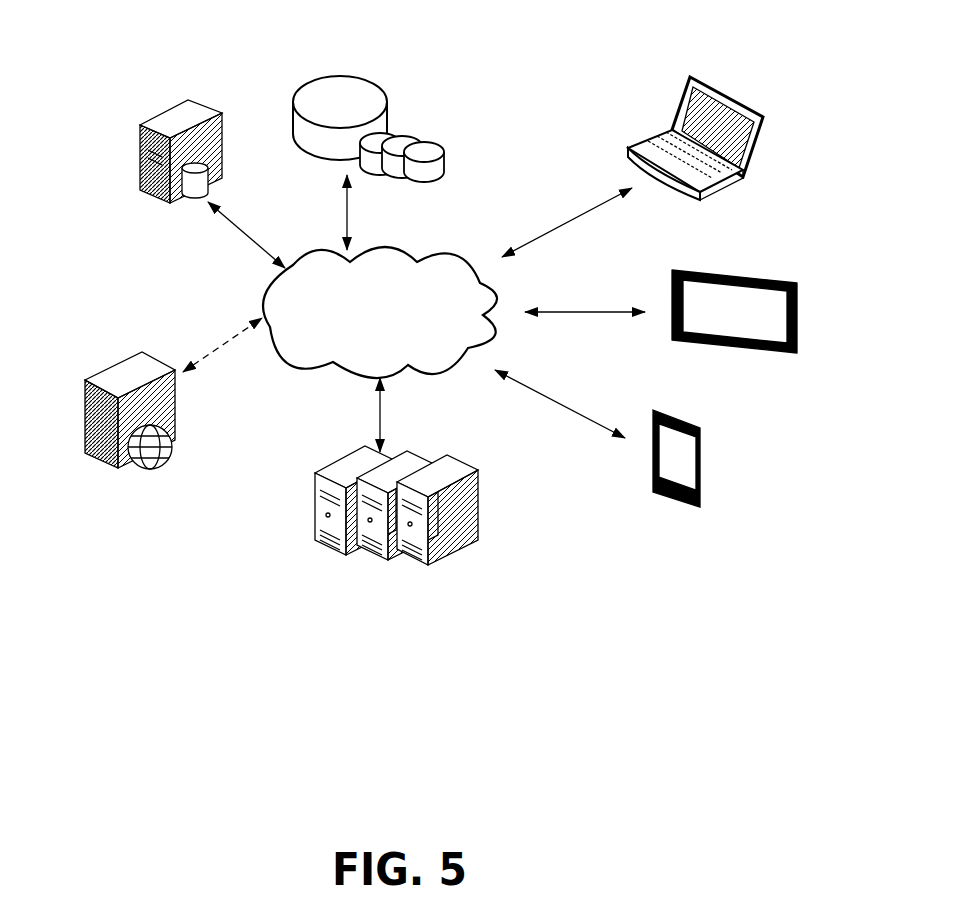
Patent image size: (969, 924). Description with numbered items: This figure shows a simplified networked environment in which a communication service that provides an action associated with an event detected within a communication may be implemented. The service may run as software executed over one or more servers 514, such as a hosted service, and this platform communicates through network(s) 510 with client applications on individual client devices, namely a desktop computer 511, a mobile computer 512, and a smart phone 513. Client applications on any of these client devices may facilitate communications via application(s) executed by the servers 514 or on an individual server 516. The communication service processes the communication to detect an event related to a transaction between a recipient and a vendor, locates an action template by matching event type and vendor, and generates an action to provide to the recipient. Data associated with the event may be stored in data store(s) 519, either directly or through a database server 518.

The network(s) 510 is at (385, 240).
The desktop computer 511 is at (733, 77).
The mobile computer 512 is at (769, 252).
The smart phone 513 is at (709, 421).
The servers 514 is at (347, 453).
The individual server 516 is at (108, 362).
The database server 518 is at (180, 210).
The data store(s) 519 is at (357, 56).